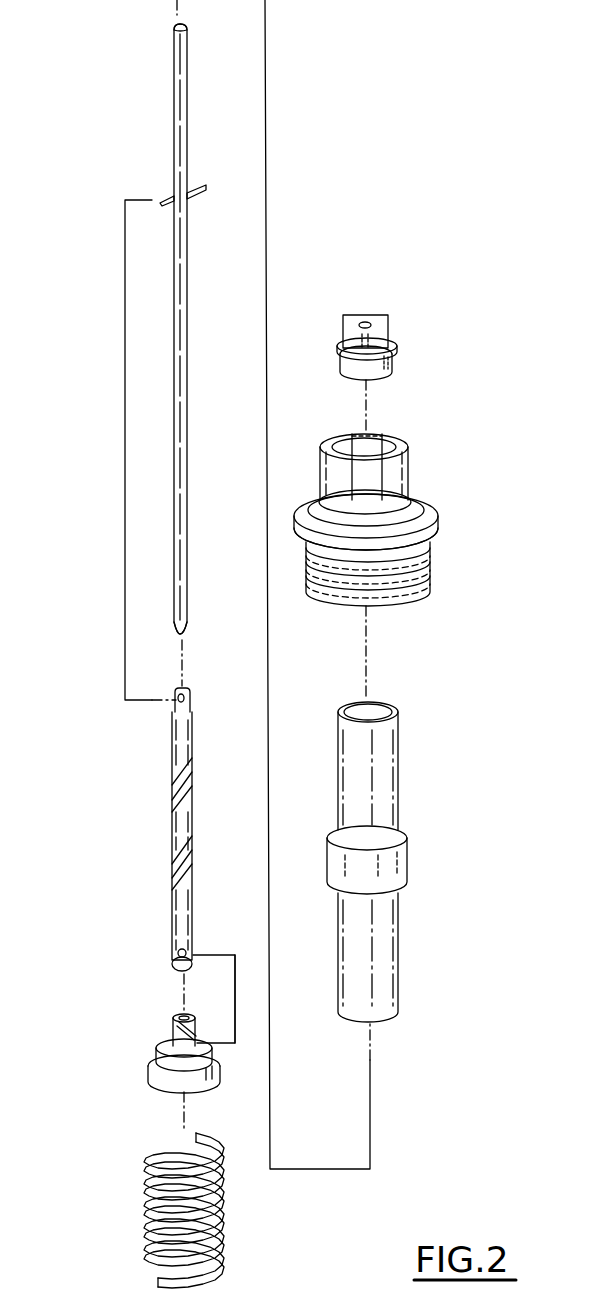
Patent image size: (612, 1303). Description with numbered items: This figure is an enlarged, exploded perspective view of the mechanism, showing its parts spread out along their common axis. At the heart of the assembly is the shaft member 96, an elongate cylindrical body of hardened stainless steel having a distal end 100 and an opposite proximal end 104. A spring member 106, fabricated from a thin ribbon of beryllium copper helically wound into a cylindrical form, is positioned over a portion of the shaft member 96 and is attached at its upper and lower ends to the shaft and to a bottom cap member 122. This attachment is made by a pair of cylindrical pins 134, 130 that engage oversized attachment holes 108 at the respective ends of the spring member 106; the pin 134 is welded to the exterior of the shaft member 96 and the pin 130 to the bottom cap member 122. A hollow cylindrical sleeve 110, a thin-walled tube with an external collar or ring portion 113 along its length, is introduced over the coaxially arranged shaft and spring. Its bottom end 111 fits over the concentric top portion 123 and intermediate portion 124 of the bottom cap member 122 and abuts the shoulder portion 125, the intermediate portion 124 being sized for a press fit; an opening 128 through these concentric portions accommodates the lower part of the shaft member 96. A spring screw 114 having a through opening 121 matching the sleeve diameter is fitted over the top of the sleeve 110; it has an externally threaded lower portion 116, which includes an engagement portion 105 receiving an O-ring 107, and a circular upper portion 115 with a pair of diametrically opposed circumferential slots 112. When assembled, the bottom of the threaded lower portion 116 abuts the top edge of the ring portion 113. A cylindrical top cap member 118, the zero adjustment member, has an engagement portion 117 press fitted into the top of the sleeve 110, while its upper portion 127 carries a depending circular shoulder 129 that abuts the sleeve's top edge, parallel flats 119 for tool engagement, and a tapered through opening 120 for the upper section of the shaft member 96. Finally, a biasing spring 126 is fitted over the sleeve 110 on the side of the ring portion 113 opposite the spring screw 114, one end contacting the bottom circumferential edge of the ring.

The shaft member 96 is at (172, 428).
The proximal end 104 is at (173, 25).
The distal end 100 is at (178, 633).
The cylindrical pin 134 is at (165, 202).
The spring member 106 is at (175, 828).
The attachment holes 108 is at (174, 702).
The top portion 123 is at (200, 1030).
The opening 128 is at (176, 1021).
The cylindrical pin 130 is at (173, 1040).
The intermediate portion 124 is at (165, 1060).
The shoulder portion 125 is at (170, 1078).
The bottom cap member 122 is at (216, 1072).
The biasing spring 126 is at (142, 1210).
The parallel flats 119 is at (343, 325).
The through opening 120 is at (365, 320).
The upper portion 127 is at (386, 315).
The top cap member 118 is at (396, 342).
The engagement portion 117 is at (393, 364).
The circular shoulder 129 is at (338, 349).
The circular upper portion 115 is at (410, 470).
The through opening 121 is at (388, 450).
The spring screw 114 is at (460, 480).
The engagement portion 105 is at (305, 514).
The circumferential slots 112 is at (420, 506).
The O-ring 107 is at (435, 530).
The externally threaded lower portion 116 is at (410, 572).
The hollow cylindrical sleeve 110 is at (400, 776).
The external collar or ring portion 113 is at (405, 870).
The bottom end 111 is at (398, 1010).